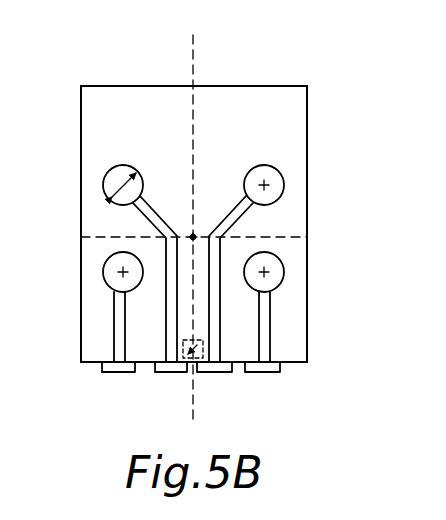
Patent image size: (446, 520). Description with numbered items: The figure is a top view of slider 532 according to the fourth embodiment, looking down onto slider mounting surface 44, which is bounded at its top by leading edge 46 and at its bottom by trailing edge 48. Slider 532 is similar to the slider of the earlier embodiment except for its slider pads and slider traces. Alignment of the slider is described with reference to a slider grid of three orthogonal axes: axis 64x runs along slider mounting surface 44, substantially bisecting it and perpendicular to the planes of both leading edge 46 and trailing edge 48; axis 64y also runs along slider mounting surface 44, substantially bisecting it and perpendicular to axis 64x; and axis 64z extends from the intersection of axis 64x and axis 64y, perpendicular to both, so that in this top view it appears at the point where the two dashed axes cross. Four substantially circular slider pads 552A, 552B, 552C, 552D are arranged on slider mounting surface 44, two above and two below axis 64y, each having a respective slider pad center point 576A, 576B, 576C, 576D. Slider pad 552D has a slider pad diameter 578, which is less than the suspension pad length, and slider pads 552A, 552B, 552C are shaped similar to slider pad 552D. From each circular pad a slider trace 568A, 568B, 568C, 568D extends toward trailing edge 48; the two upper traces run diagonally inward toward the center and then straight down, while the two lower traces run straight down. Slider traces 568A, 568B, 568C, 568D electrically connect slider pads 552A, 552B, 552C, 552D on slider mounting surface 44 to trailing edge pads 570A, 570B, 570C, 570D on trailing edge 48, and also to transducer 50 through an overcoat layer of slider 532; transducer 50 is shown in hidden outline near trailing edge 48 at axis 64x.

The slider 532 is at (125, 84).
The leading edge 46 is at (262, 86).
The slider mounting surface 44 is at (267, 112).
The trailing edge 48 is at (307, 362).
The axis 64x is at (193, 47).
The axis 64y is at (300, 236).
The axis 64z is at (193, 236).
The slider pad diameter 578 is at (81, 152).
The slider pad 552A is at (277, 172).
The slider pad 552B is at (278, 262).
The slider pad 552C is at (106, 258).
The slider pad 552D is at (122, 165).
The slider pad center point 576A is at (268, 183).
The slider pad center point 576B is at (268, 277).
The slider pad center point 576C is at (119, 275).
The slider pad center point 576D is at (121, 186).
The slider trace 568A is at (234, 220).
The slider trace 568B is at (262, 330).
The slider trace 568C is at (118, 333).
The slider trace 568D is at (158, 222).
The trailing edge pad 570A is at (205, 373).
The trailing edge pad 570B is at (270, 373).
The trailing edge pad 570C is at (105, 370).
The trailing edge pad 570D is at (168, 368).
The transducer 50 is at (171, 365).